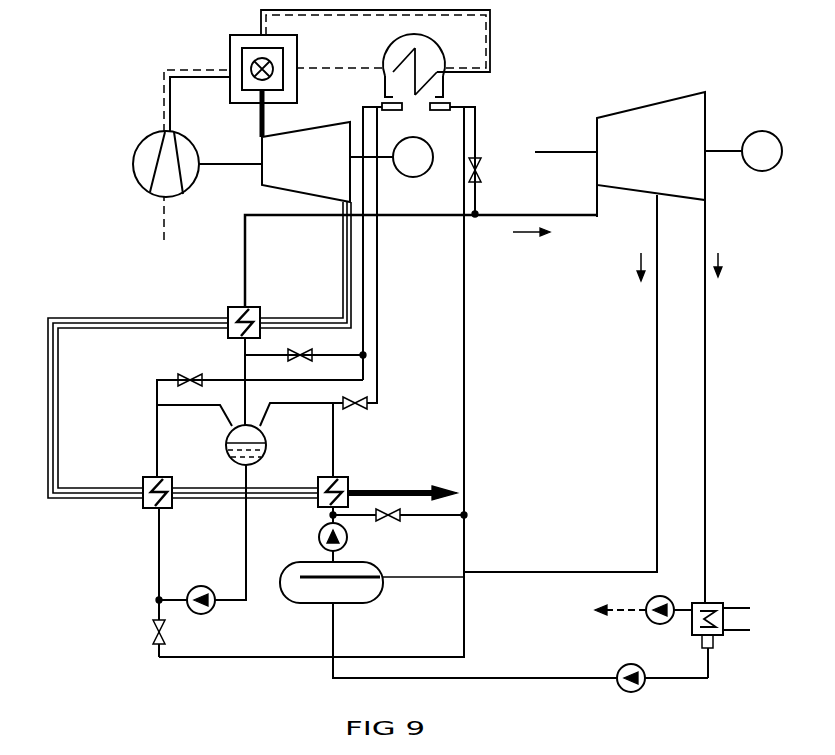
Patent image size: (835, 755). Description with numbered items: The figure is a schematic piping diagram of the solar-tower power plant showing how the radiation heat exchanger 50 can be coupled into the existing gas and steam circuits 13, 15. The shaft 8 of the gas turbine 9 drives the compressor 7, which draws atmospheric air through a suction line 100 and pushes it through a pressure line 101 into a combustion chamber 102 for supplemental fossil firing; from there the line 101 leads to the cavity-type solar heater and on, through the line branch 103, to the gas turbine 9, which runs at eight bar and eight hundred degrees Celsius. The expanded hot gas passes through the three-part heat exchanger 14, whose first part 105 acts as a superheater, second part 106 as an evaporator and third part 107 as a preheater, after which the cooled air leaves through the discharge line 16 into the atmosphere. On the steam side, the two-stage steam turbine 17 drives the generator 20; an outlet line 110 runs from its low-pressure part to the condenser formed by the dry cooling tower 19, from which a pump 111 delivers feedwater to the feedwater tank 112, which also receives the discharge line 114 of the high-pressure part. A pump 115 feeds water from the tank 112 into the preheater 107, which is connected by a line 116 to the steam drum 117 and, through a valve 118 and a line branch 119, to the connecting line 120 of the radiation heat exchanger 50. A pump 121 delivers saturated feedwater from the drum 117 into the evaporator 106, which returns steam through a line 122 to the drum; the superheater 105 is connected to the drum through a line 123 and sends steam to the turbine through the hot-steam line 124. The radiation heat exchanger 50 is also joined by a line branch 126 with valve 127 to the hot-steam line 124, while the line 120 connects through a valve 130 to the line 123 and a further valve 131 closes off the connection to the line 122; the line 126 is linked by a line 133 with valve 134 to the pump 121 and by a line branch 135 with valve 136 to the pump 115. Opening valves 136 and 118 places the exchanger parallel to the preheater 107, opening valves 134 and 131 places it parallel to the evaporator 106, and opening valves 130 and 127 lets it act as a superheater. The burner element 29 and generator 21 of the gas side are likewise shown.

The compressor 7 is at (182, 190).
The shaft 8 is at (215, 162).
The gas turbine 9 is at (272, 189).
The gas circuit 13 is at (331, 46).
The heat exchanger 14 is at (241, 383).
The steam circuit 15 is at (557, 315).
The discharge line 16 is at (408, 487).
The steam turbine 17 is at (706, 126).
The dry cooling tower 19 is at (720, 603).
The generator 20 is at (758, 171).
The generator 21 is at (419, 177).
The burner 29 is at (414, 104).
The radiation heat exchanger 50 is at (401, 138).
The suction line 100 is at (162, 220).
The pressure line 101 is at (180, 71).
The combustion chamber 102 is at (251, 64).
The line branch 103 is at (272, 115).
The first part of the heat exchanger 105 is at (262, 308).
The second part of the heat exchanger 106 is at (143, 480).
The third part of the heat exchanger 107 is at (347, 478).
The outlet line 110 is at (707, 411).
The pump 111 is at (622, 664).
The feedwater tank 112 is at (383, 591).
The discharge line 114 is at (656, 401).
The pump 115 is at (348, 540).
The line 116 is at (285, 404).
The steam drum 117 is at (227, 451).
The valve 118 is at (366, 405).
The line branch 119 is at (378, 311).
The connecting line 120 is at (362, 117).
The pump 121 is at (203, 586).
The line 122 is at (200, 406).
The line 123 is at (240, 376).
The hot-steam line 124 is at (297, 217).
The line branch 126 is at (477, 131).
The valve 127 is at (483, 180).
The valve 130 is at (312, 358).
The valve 131 is at (178, 378).
The line 133 is at (466, 394).
The valve 134 is at (167, 635).
The line branch 135 is at (464, 517).
The valve 136 is at (398, 518).